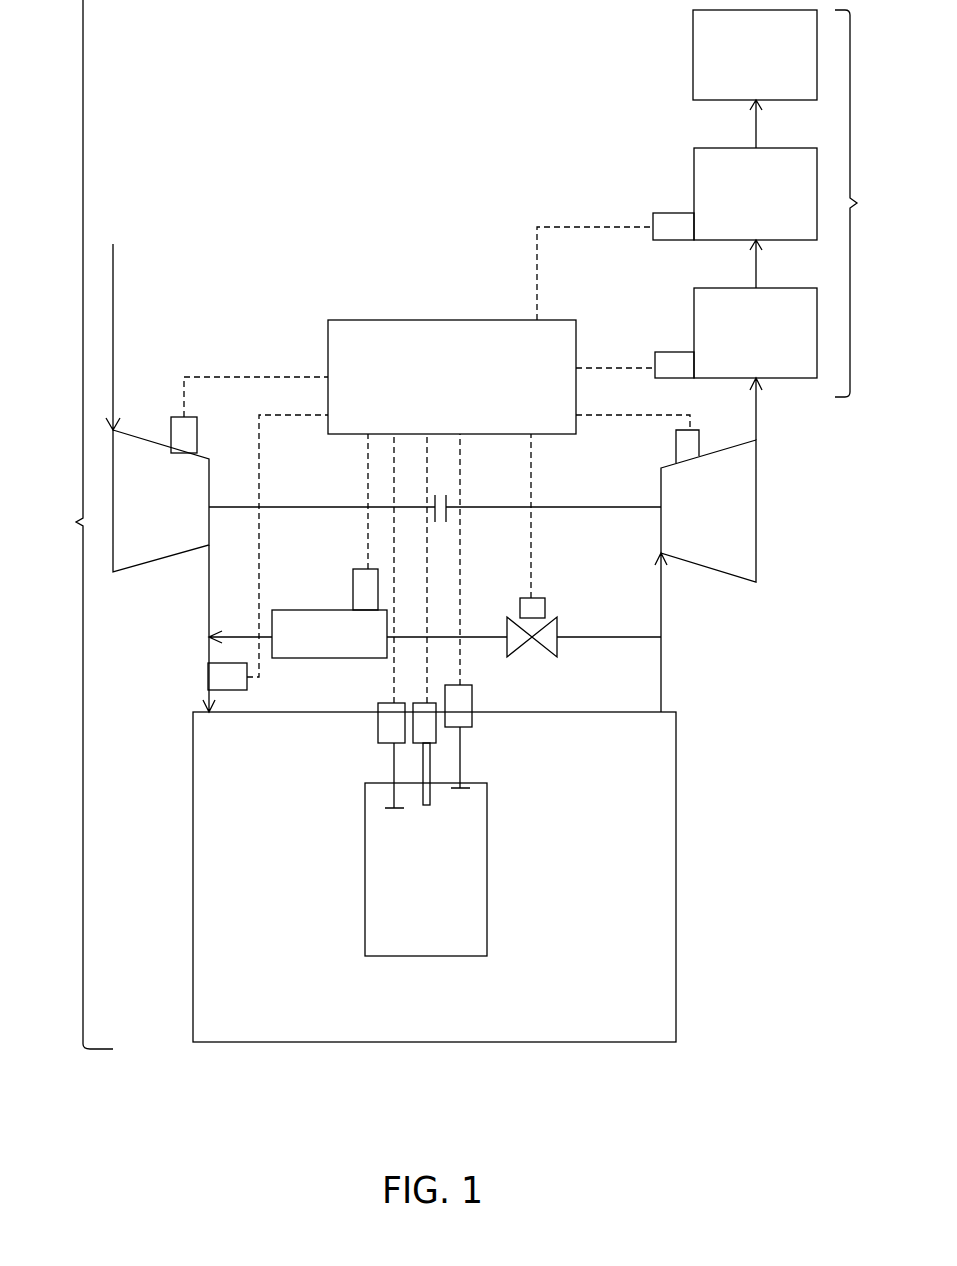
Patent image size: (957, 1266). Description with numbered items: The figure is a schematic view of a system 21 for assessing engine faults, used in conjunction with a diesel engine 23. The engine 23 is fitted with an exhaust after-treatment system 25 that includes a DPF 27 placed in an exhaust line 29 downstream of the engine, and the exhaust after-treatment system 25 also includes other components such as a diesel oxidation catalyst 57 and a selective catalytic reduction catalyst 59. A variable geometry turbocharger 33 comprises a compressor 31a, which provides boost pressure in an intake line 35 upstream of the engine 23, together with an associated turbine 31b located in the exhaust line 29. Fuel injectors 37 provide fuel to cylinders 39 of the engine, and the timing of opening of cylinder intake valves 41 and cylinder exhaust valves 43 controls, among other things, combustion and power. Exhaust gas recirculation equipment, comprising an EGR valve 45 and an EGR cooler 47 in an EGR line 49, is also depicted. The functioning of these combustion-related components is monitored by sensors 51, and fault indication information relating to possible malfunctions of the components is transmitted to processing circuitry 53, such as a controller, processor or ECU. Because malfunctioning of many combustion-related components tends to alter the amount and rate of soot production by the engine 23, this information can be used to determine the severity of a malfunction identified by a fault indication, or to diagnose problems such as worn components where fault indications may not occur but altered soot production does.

The system 21 is at (70, 522).
The diesel engine 23 is at (193, 963).
The exhaust after-treatment system 25 is at (858, 203).
The DPF 27 is at (694, 166).
The exhaust line 29 is at (661, 680).
The compressor 31a is at (165, 560).
The turbine 31b is at (756, 545).
The variable geometry turbocharger 33 is at (302, 496).
The intake line 35 is at (209, 648).
The fuel injector 37 is at (432, 795).
The cylinder 39 is at (488, 930).
The cylinder intake valve 41 is at (387, 798).
The cylinder exhaust valve 43 is at (463, 768).
The EGR valve 45 is at (560, 628).
The EGR cooler 47 is at (333, 608).
The EGR line 49 is at (224, 632).
The sensor 51 is at (171, 420).
The processing circuitry 53 is at (358, 320).
The diesel oxidation catalyst 57 is at (694, 328).
The selective catalytic reduction catalyst 59 is at (693, 78).